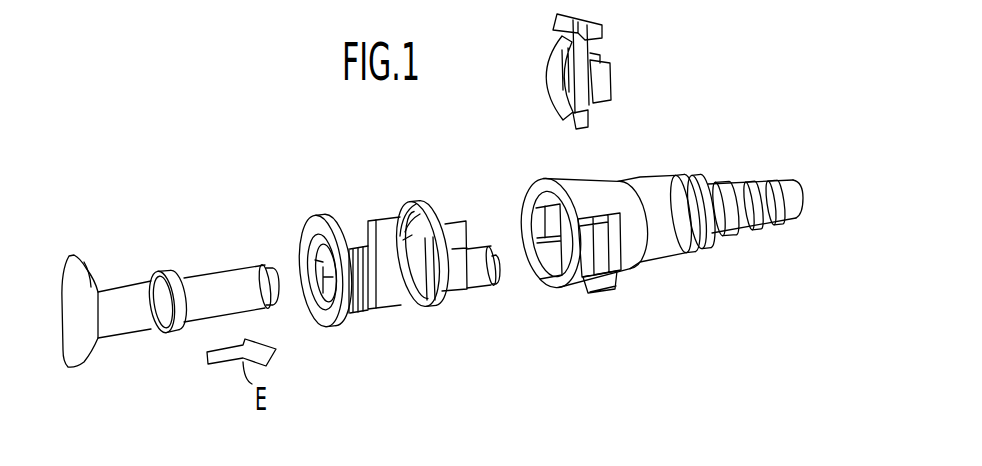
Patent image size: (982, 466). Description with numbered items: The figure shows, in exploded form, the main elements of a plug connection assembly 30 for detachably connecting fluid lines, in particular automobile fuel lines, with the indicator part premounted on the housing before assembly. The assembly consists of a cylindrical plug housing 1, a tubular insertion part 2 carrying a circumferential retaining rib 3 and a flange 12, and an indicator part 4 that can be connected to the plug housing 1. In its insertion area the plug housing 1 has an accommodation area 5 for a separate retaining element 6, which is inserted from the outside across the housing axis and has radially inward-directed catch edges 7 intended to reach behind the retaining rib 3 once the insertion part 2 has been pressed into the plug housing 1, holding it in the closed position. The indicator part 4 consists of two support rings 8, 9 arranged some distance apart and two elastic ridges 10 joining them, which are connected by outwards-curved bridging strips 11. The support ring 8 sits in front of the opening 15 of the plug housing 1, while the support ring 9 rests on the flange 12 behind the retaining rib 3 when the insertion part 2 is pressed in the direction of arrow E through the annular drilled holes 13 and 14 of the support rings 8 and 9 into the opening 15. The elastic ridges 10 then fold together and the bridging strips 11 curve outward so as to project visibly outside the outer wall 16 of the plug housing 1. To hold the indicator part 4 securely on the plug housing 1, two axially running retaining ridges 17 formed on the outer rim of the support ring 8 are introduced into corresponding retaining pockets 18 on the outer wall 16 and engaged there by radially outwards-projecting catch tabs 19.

The plug housing 1 is at (652, 187).
The insertion part 2 is at (227, 278).
The retaining rib 3 is at (143, 281).
The indicator part 4 is at (359, 203).
The accommodation area 5 is at (582, 190).
The retaining element 6 is at (600, 78).
The catch edges 7 is at (548, 72).
The support ring 8 is at (417, 214).
The support ring 9 is at (333, 212).
The elastic ridges 10 is at (358, 313).
The bridging strips 11 is at (397, 293).
The flange 12 is at (83, 274).
The annular drilled hole 13 is at (298, 237).
The annular drilled hole 14 is at (402, 208).
The opening 15 is at (558, 247).
The outer wall 16 is at (588, 287).
The retaining ridges 17 is at (465, 277).
The retaining pockets 18 is at (613, 252).
The catch tabs 19 is at (497, 283).
The plug connection assembly 30 is at (729, 129).